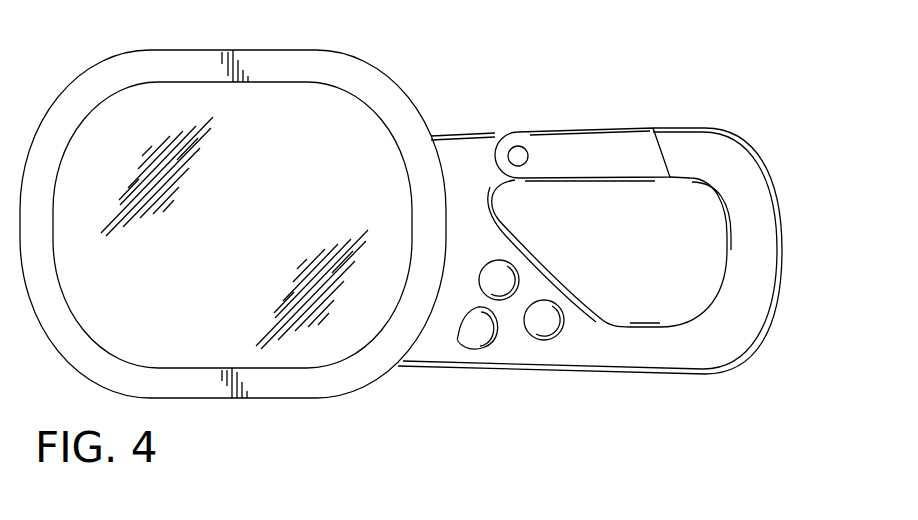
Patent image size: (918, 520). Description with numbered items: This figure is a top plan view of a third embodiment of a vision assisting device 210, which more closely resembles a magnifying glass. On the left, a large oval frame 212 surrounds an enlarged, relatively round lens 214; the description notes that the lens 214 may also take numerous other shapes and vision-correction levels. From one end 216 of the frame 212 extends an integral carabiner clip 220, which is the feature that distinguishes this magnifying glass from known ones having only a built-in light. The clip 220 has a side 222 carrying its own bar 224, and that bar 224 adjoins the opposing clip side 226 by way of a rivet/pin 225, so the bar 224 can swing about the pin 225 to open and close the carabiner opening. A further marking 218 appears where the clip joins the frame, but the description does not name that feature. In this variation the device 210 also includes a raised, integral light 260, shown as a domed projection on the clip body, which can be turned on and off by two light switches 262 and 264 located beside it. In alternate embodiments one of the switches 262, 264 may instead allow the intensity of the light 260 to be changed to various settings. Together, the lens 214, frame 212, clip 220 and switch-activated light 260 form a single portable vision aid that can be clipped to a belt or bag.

The vision assisting device 210 is at (422, 75).
The frame 212 is at (615, 223).
The lens 214 is at (252, 245).
The end of frame 216 is at (272, 383).
The attachment portion 218 is at (455, 286).
The carabiner clip 220 is at (775, 70).
The clip side 222 is at (688, 157).
The bar 224 is at (570, 147).
The rivet/pin 225 is at (515, 148).
The clip side 226 is at (773, 250).
The light 260 is at (483, 342).
The light switch 262 is at (553, 323).
The light switch 264 is at (510, 277).